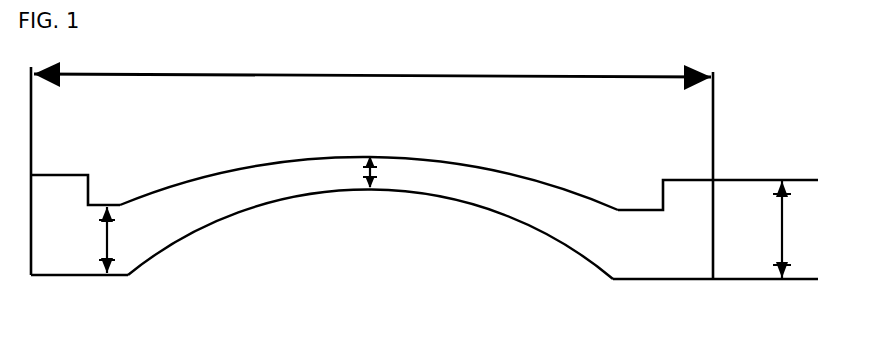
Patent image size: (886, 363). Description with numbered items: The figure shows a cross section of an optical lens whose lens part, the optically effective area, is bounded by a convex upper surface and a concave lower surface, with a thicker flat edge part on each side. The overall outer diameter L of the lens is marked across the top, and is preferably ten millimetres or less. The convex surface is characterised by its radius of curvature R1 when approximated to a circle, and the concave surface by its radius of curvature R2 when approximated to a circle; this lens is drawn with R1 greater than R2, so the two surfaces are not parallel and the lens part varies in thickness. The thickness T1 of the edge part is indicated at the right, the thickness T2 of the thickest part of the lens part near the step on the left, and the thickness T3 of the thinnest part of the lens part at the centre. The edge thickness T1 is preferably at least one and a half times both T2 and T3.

The outer diameter L is at (372, 93).
The radius of curvature of convex surface R1 is at (477, 165).
The radius of curvature of concave surface R2 is at (460, 200).
The thickness of edge part T1 is at (816, 229).
The thickness of thickest part of lens part T2 is at (90, 243).
The thickness of thinnest part of lens part T3 is at (357, 173).